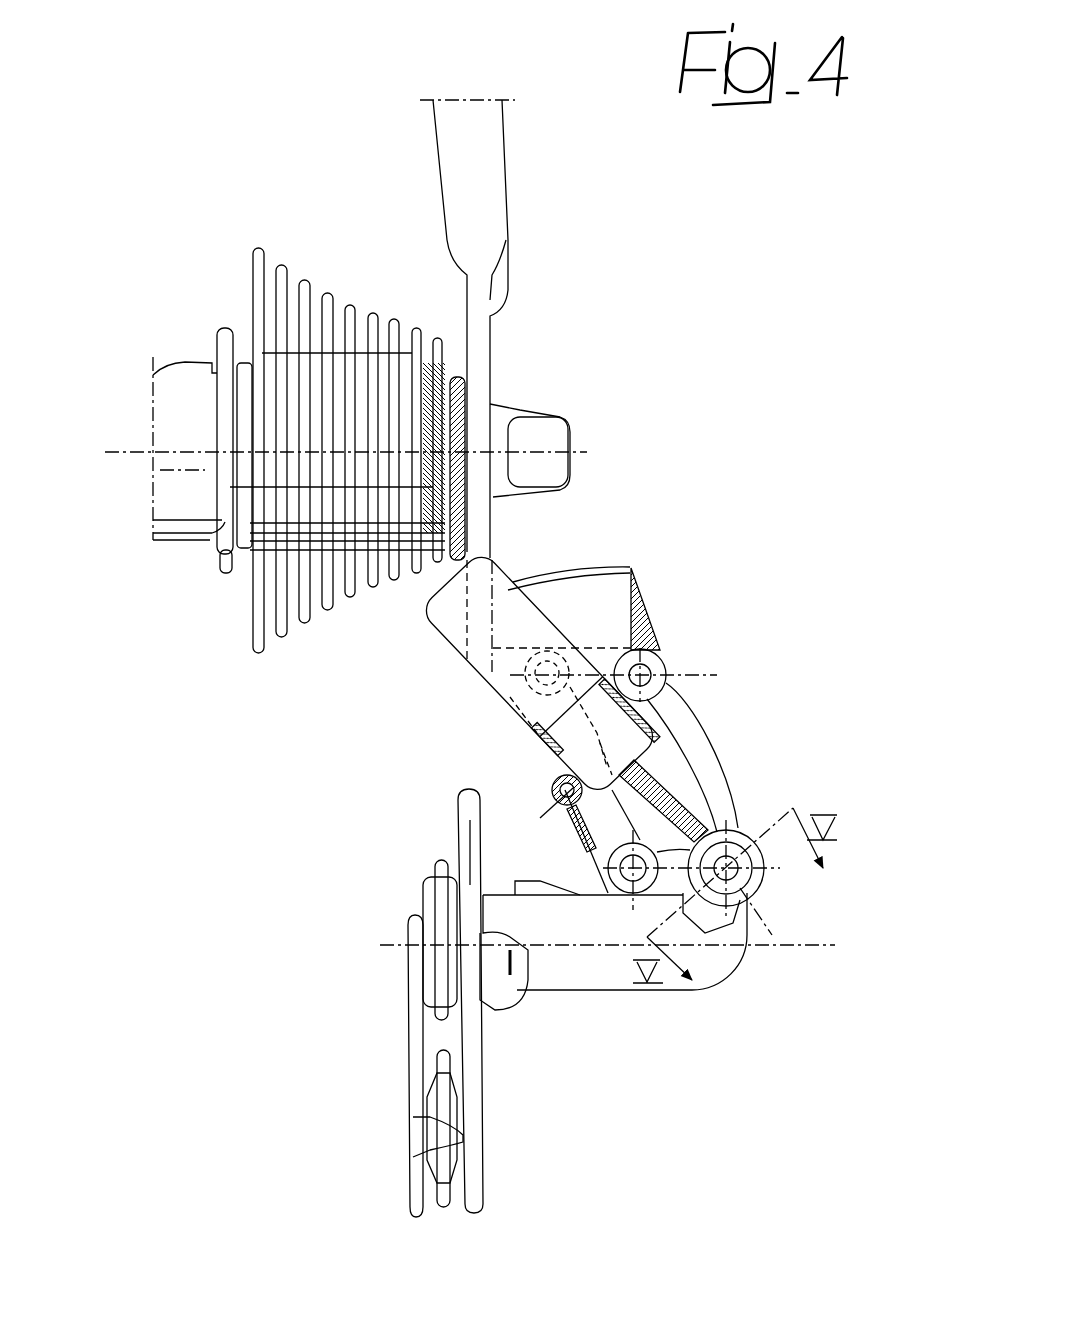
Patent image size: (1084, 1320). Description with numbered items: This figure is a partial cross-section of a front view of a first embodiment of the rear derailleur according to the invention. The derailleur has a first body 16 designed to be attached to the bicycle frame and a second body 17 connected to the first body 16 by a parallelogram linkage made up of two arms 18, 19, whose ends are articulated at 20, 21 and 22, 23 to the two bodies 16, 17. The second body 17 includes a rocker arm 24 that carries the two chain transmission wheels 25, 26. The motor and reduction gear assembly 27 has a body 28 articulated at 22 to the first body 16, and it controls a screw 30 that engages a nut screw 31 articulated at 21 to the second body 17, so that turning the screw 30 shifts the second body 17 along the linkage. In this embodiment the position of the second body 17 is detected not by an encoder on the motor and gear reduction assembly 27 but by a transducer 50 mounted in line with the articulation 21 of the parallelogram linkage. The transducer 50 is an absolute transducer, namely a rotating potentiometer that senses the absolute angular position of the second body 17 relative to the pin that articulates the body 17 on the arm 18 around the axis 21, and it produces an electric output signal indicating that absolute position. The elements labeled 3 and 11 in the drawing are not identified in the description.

The frame member (chain stay) 3 is at (485, 190).
The sprockets 11 is at (302, 282).
The first body 16 is at (608, 582).
The second body 17 is at (610, 973).
The arm 18 is at (693, 747).
The arm 19 is at (600, 818).
The articulation 20 is at (670, 658).
The articulation 21 is at (775, 940).
The articulation 22 is at (607, 630).
The articulation 23 is at (618, 902).
The rocker arm 24 is at (475, 1072).
The chain transmission wheel 25 is at (433, 898).
The chain transmission wheel 26 is at (435, 1098).
The motor and gear reduction assembly 27 is at (470, 684).
The body 28 is at (457, 622).
The screw 30 is at (707, 767).
The nut screw 31 is at (737, 792).
The transducer 50 is at (781, 866).